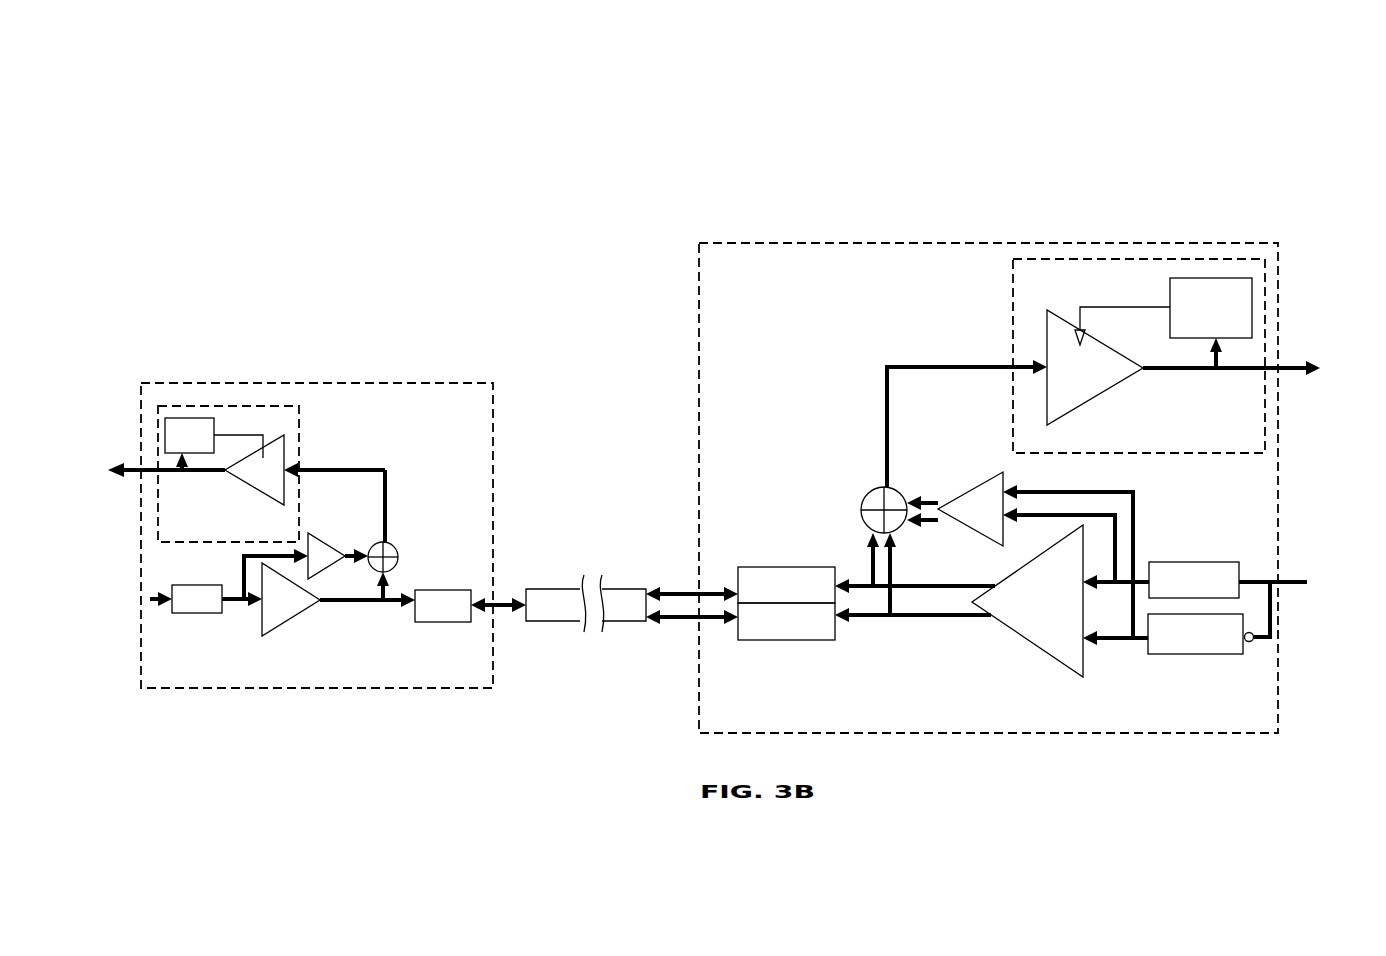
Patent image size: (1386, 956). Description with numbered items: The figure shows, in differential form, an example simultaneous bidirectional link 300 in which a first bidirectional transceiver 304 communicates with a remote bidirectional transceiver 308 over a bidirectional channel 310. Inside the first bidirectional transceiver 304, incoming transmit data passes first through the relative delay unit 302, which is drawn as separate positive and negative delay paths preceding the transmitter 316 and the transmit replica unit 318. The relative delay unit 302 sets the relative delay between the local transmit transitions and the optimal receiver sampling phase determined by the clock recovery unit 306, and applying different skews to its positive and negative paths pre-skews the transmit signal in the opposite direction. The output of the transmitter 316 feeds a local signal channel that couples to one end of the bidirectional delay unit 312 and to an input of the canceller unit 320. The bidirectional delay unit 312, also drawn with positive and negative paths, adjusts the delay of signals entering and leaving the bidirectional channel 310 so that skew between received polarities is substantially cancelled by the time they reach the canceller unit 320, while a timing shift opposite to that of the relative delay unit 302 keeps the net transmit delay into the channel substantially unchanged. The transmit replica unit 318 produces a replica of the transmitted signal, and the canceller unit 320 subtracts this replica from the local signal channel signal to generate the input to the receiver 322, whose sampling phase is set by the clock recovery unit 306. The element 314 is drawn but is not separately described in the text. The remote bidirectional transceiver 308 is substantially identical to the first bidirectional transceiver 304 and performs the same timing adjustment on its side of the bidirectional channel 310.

The simultaneous bidirectional link 300 is at (1327, 130).
The relative delay unit 302 is at (1168, 560).
The first bidirectional transceiver 304 is at (1035, 463).
The clock recovery unit 306 is at (1168, 293).
The remote bidirectional transceiver 308 is at (551, 560).
The bidirectional channel 310 is at (616, 573).
The bidirectional delay unit 312 is at (813, 562).
The termination / hybrid 314 is at (442, 622).
The transmitter 316 is at (1078, 657).
The transmit replica unit 318 is at (1005, 477).
The canceller unit 320 is at (862, 489).
The receiver 322 is at (1139, 323).